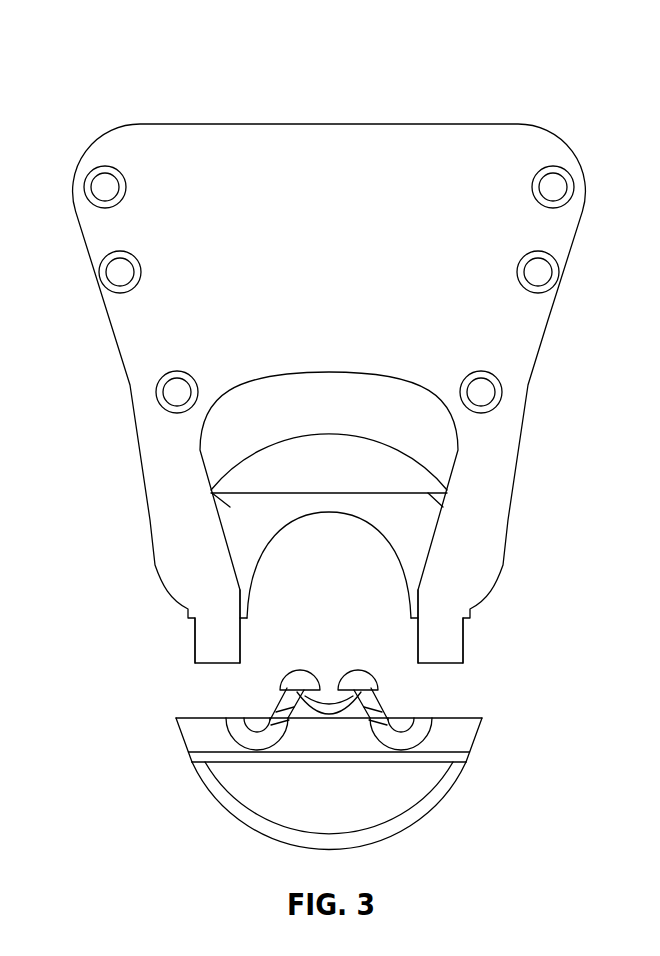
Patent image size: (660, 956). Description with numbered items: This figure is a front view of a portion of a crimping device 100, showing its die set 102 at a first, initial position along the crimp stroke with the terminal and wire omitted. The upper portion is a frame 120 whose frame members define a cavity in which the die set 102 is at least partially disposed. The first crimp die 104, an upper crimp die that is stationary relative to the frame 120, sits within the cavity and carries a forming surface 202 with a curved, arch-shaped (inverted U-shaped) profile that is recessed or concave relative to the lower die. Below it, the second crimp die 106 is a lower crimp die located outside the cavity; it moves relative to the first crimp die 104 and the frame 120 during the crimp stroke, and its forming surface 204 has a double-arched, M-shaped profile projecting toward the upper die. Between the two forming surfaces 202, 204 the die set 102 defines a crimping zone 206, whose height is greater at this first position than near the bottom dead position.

The crimping device 100 is at (236, 88).
The frame 120 is at (147, 323).
The first crimp die 104 is at (238, 515).
The die set 102 is at (238, 548).
The forming surface 202 is at (284, 530).
The forming surface 204 is at (359, 670).
The crimping zone 206 is at (372, 621).
The second crimp die 106 is at (192, 740).